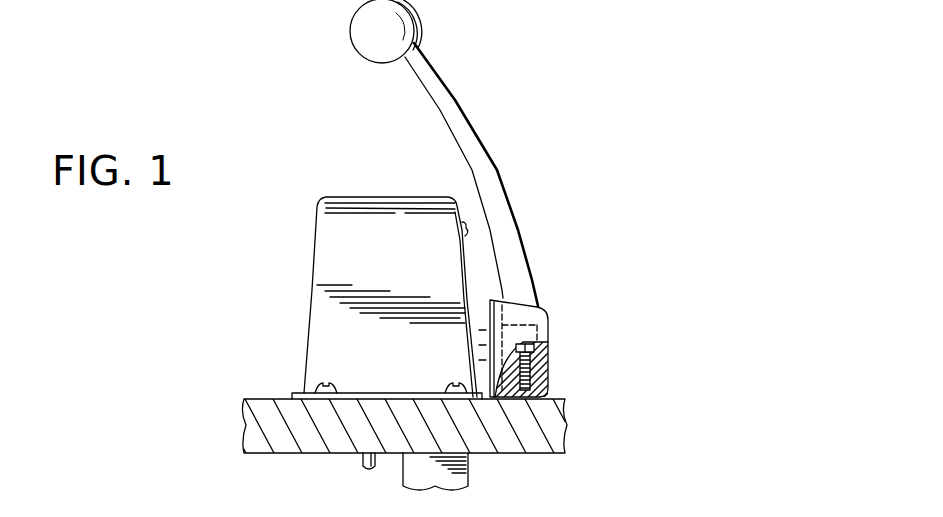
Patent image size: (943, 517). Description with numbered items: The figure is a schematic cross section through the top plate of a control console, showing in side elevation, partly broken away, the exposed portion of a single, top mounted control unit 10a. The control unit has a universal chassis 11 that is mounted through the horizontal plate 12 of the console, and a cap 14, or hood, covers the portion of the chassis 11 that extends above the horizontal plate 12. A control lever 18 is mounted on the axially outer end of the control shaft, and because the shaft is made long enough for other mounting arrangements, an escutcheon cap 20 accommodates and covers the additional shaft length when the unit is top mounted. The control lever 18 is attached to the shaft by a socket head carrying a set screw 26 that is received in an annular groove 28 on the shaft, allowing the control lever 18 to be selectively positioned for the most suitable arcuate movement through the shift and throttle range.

The single, top mounted control unit 10a is at (302, 306).
The universal chassis 11 is at (478, 474).
The horizontal plate 12 is at (557, 423).
The cap 14 is at (362, 215).
The control lever 18 is at (498, 160).
The escutcheon cap 20 is at (477, 298).
The set screw 26 is at (549, 368).
The annular groove 28 is at (530, 350).